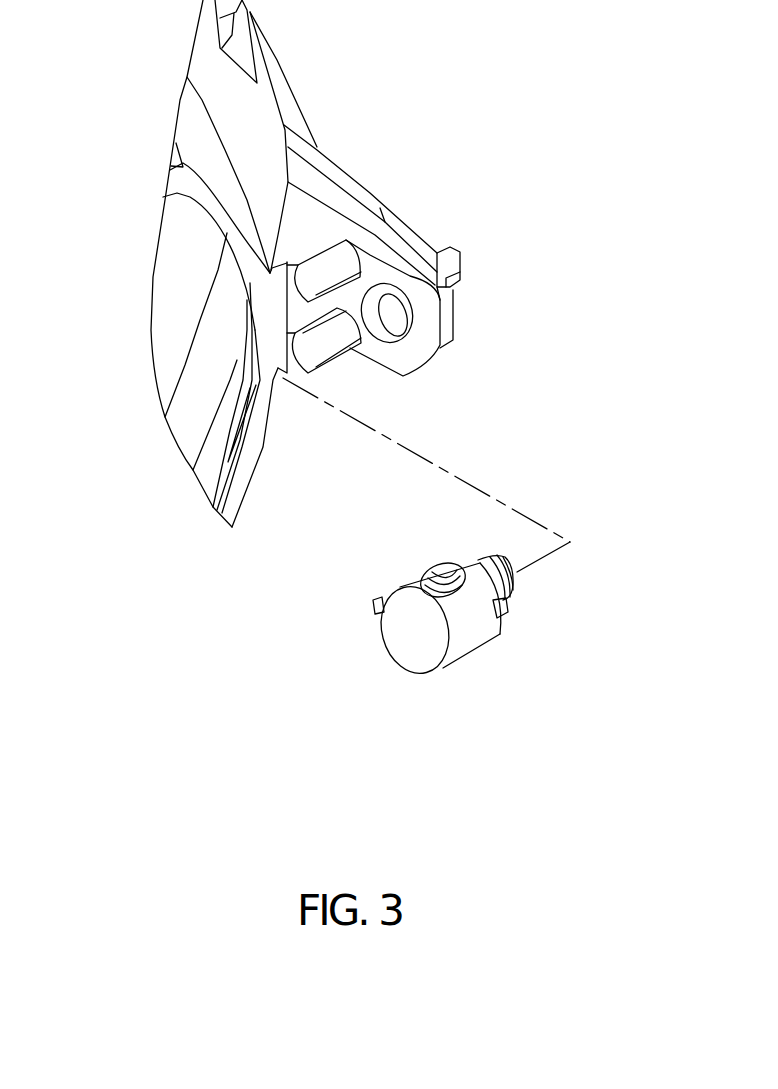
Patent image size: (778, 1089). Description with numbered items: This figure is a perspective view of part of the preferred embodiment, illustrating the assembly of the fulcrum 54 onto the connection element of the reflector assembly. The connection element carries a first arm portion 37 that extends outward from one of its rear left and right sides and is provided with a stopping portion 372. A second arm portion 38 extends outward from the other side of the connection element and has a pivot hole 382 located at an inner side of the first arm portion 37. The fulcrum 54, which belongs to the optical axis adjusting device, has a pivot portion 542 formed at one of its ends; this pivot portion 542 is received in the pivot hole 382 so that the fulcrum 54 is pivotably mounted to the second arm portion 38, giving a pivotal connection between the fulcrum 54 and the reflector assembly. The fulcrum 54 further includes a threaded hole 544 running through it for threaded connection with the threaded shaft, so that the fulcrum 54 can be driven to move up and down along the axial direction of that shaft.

The first arm portion 37 is at (385, 200).
The stopping portion 372 is at (450, 252).
The second arm portion 38 is at (446, 234).
The pivot hole 382 is at (393, 331).
The fulcrum 54 is at (480, 632).
The pivot portion 542 is at (510, 580).
The threaded hole 544 is at (433, 577).